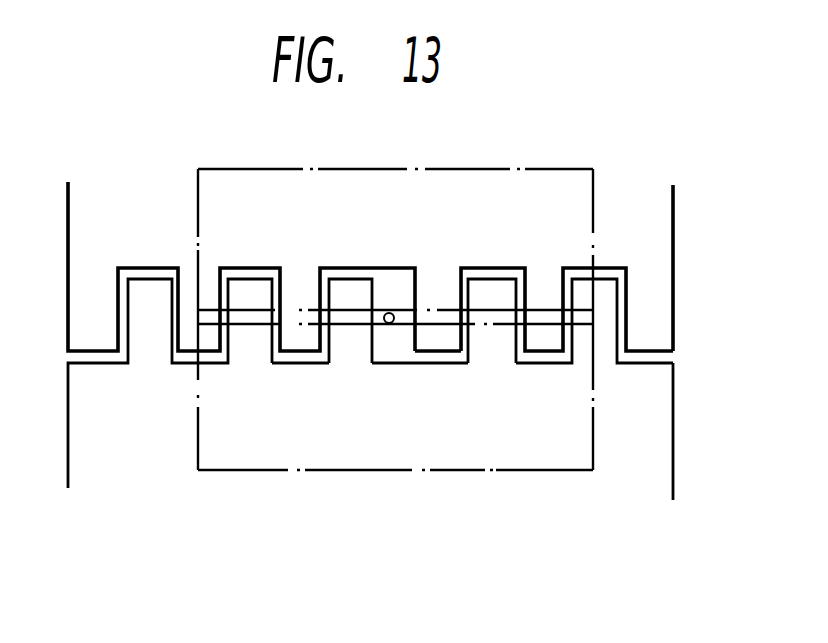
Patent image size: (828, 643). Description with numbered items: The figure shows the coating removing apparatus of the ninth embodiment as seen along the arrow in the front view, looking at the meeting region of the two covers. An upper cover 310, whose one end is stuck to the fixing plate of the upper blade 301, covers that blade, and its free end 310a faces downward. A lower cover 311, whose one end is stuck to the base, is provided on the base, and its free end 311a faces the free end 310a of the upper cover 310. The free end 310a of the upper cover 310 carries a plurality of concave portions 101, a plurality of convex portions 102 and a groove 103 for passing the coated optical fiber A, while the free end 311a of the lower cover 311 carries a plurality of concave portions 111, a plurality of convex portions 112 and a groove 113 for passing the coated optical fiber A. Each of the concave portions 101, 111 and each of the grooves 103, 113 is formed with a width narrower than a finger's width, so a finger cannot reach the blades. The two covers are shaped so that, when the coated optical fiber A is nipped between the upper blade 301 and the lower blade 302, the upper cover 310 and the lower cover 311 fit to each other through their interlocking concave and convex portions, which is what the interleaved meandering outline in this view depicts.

The upper cover 310 is at (401, 231).
The lower cover 311 is at (402, 412).
The free end of the upper cover 310a is at (657, 324).
The free end of the lower cover 311a is at (657, 426).
The concave portions 101 is at (248, 266).
The convex portions 102 is at (440, 277).
The groove 103 is at (347, 266).
The concave portions 111 is at (303, 364).
The convex portions 112 is at (495, 350).
The groove 113 is at (408, 365).
The upper blade 301 is at (535, 183).
The lower blade 302 is at (473, 443).
The coated optical fiber A is at (390, 313).